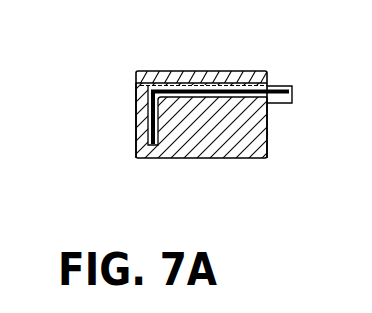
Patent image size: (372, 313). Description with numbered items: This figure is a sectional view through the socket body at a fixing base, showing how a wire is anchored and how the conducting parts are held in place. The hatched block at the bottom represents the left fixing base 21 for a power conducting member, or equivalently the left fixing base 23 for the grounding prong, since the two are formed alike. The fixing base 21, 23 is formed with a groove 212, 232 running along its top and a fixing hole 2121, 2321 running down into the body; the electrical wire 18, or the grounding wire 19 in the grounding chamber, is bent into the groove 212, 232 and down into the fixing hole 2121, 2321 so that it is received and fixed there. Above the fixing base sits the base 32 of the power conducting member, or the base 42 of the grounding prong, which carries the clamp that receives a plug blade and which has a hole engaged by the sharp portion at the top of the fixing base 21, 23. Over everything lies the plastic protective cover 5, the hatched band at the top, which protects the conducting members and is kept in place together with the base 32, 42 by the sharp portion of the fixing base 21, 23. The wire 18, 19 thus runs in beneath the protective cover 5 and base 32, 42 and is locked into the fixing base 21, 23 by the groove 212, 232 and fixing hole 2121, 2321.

The plastic protective cover 5 is at (192, 78).
The base 32 is at (226, 61).
The base 42 is at (258, 72).
The electrical wire 18 is at (150, 124).
The fixing hole 2121 is at (173, 127).
The grounding wire 19 is at (95, 147).
The fixing hole 2321 is at (95, 147).
The groove 212 is at (268, 137).
The groove 232 is at (312, 150).
The fixing base 21 is at (202, 156).
The fixing base 23 is at (237, 99).